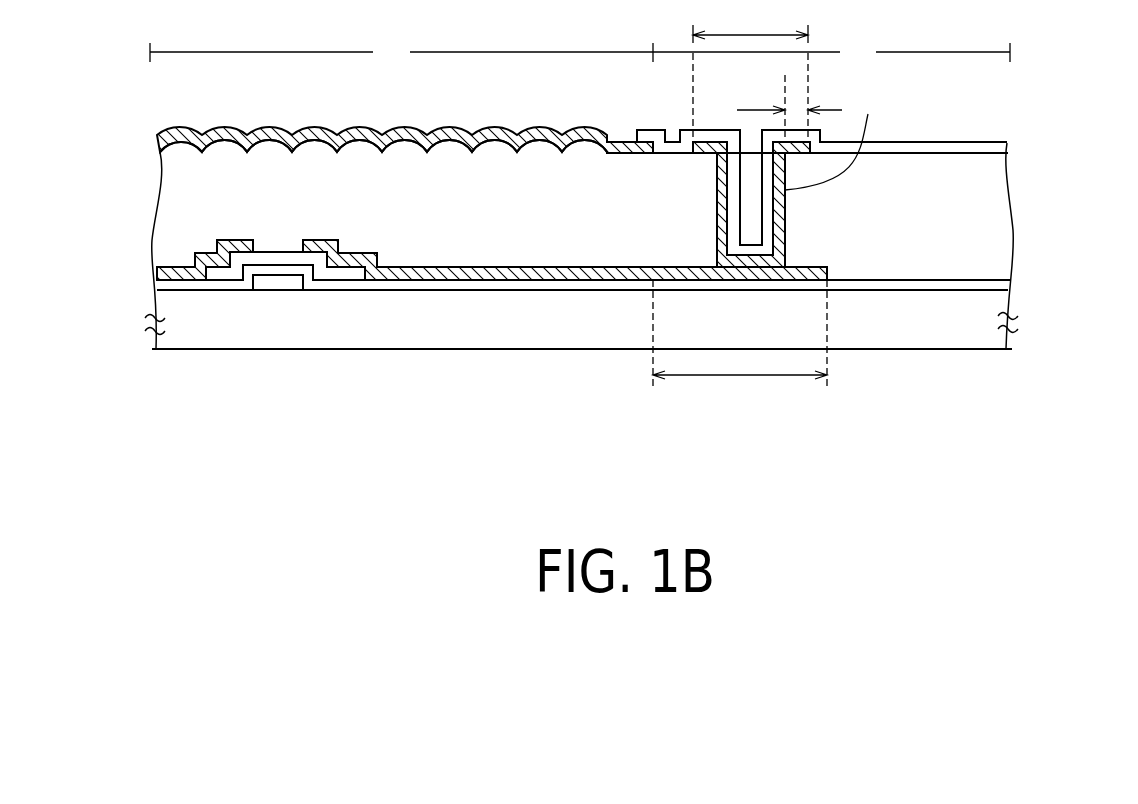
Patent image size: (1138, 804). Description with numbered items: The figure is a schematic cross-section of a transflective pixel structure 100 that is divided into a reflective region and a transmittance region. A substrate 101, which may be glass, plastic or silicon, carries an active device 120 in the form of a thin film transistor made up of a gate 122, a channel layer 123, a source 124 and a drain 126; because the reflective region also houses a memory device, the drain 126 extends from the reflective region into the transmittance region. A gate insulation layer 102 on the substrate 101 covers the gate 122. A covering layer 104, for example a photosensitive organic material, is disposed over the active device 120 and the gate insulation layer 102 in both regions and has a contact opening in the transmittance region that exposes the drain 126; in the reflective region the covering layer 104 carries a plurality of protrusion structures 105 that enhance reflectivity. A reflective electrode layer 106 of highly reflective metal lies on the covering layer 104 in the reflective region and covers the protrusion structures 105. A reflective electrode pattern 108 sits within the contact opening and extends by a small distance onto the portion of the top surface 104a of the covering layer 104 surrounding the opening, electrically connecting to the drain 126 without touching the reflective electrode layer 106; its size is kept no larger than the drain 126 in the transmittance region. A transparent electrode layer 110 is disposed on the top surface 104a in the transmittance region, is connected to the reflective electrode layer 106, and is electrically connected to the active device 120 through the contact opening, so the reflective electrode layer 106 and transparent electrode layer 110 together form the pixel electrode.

The transflective pixel structure 100 is at (594, 247).
The substrate 101 is at (971, 333).
The gate insulation layer 102 is at (993, 285).
The covering layer 104 is at (990, 205).
The top surface of the covering layer 104a is at (970, 153).
The protrusion structures 105 is at (183, 150).
The reflective electrode layer 106 is at (155, 143).
The reflective electrode pattern 108 is at (705, 140).
The transparent electrode layer 110 is at (948, 143).
The active device 120 is at (492, 354).
The gate 122 is at (268, 282).
The channel layer 123 is at (318, 255).
The source 124 is at (226, 248).
The drain 126 is at (565, 322).